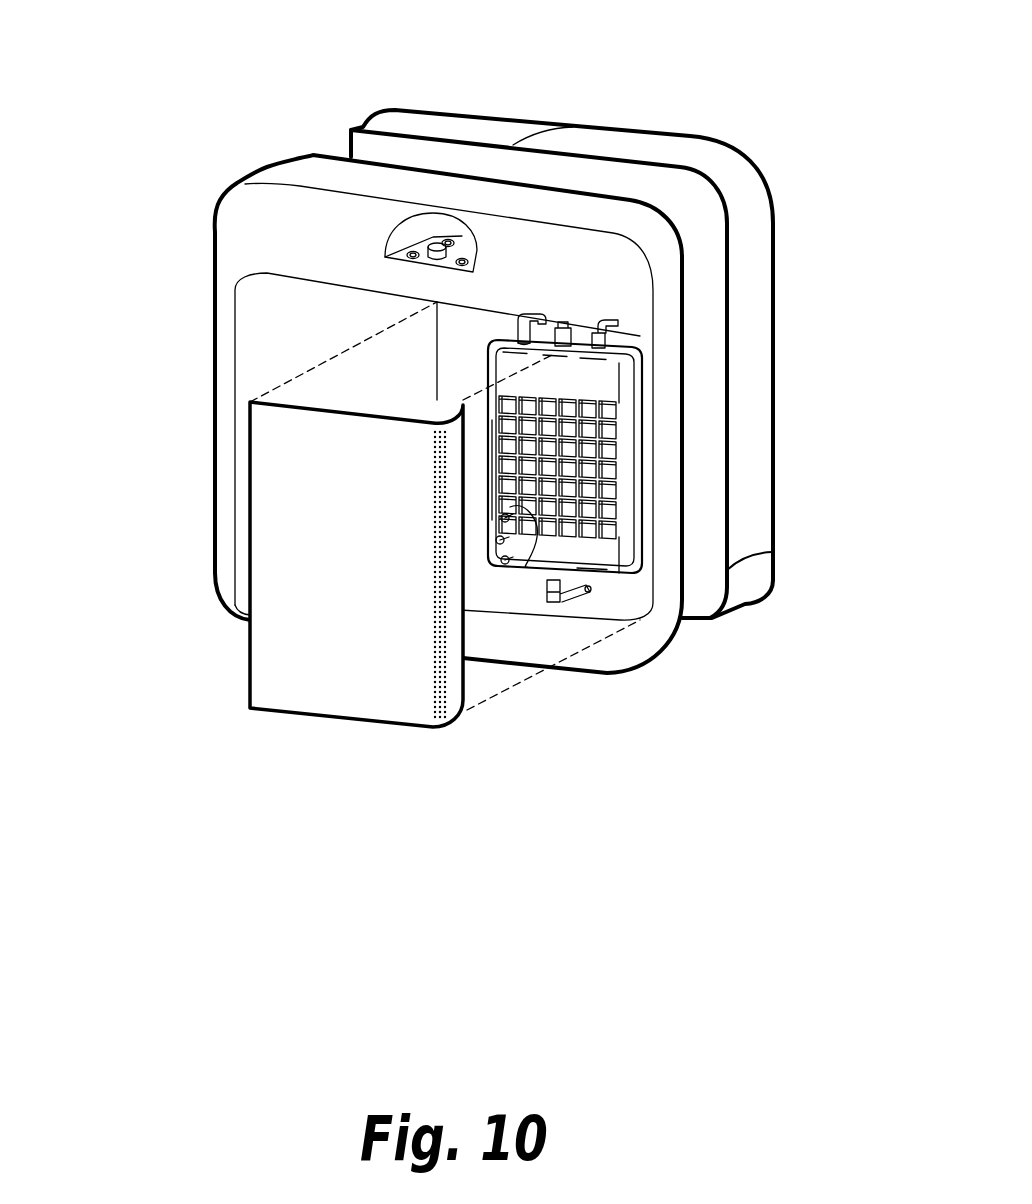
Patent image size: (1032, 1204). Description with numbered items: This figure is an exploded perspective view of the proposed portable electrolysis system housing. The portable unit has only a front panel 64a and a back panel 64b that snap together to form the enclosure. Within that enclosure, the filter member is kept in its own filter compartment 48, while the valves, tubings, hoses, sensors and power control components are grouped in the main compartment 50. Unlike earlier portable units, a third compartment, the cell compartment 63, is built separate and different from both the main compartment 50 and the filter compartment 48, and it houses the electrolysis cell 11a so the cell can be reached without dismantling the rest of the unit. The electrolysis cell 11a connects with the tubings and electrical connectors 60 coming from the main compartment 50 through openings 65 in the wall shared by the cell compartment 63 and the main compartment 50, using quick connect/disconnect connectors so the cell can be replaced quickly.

The filter compartment 48 is at (285, 330).
The main compartment 50 is at (550, 200).
The front panel 64a is at (668, 420).
The back panel 64b is at (758, 300).
The electrolysis cell 11a is at (625, 513).
The cell compartment 63 is at (623, 610).
The electrical connectors 60 is at (470, 303).
The openings 65 is at (530, 318).